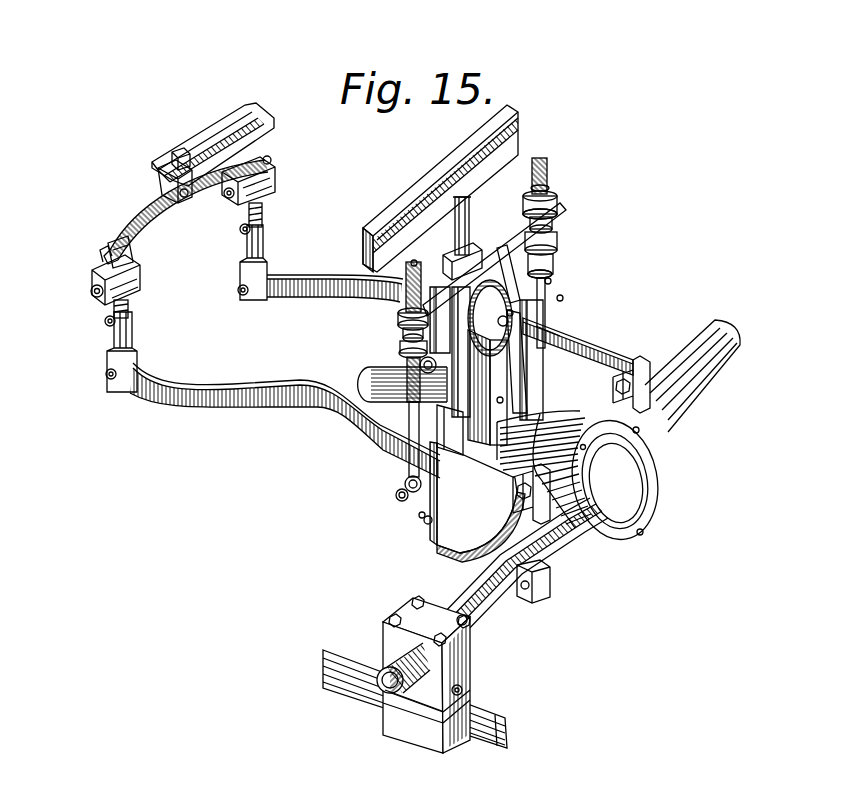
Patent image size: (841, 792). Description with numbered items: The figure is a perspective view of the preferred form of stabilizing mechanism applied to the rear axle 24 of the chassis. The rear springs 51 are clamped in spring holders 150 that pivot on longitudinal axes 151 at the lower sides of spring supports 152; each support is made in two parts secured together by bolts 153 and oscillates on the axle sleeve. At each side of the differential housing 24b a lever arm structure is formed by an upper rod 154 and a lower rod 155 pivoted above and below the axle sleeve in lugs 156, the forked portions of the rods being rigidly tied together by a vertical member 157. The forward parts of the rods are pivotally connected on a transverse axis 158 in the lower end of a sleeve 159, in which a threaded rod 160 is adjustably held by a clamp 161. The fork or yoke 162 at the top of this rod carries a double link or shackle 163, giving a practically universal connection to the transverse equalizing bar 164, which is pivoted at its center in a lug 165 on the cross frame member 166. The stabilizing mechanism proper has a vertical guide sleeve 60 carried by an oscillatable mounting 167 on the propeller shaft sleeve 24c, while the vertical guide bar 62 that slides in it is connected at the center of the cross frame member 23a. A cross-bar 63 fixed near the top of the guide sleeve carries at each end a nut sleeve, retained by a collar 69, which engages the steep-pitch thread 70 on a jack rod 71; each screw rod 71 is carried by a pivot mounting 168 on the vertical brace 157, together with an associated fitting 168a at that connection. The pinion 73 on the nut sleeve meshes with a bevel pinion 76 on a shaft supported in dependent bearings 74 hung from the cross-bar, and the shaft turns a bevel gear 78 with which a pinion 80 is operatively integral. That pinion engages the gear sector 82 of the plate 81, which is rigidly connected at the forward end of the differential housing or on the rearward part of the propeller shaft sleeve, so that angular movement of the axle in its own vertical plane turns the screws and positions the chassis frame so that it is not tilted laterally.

The cross frame member 23a is at (508, 104).
The shaft 24 is at (722, 362).
The differential housing 24b is at (585, 423).
The propeller shaft sleeve 24c is at (368, 370).
The rear springs 51 is at (508, 722).
The vertical guide sleeve 60 is at (440, 412).
The guide bar 62 is at (455, 238).
The cross-bar 63 is at (540, 163).
The collar 69 is at (553, 208).
The thread 70 is at (363, 249).
The jack rod 71 is at (565, 310).
The pinion 73 is at (552, 232).
The dependent bearings 74 is at (507, 268).
The bevel pinions 76 is at (548, 280).
The bevel gear 78 is at (420, 262).
The pinion 80 is at (556, 270).
The plate 81 is at (540, 330).
The gear sector 82 is at (512, 312).
The spring holders 150 is at (467, 697).
The longitudinal axes 151 is at (463, 682).
The spring supports 152 is at (458, 668).
The bolts 153 is at (470, 622).
The upper rod 154 is at (537, 417).
The lower rod 155 is at (522, 415).
The lugs 156 is at (633, 400).
The vertical member 157 is at (572, 415).
The transverse axis 158 is at (243, 296).
The sleeve 159 is at (133, 333).
The threaded rod 160 is at (268, 206).
The clamp 161 is at (242, 228).
The fork or yoke 162 is at (272, 172).
The double link or shackle 163 is at (240, 204).
The transverse equalizing bar 164 is at (140, 205).
The lug 165 is at (156, 172).
The cross frame member 166 is at (232, 112).
The oscillatable mounting 167 is at (405, 480).
The pivot mounting 168 is at (502, 399).
The nut 168a is at (484, 462).